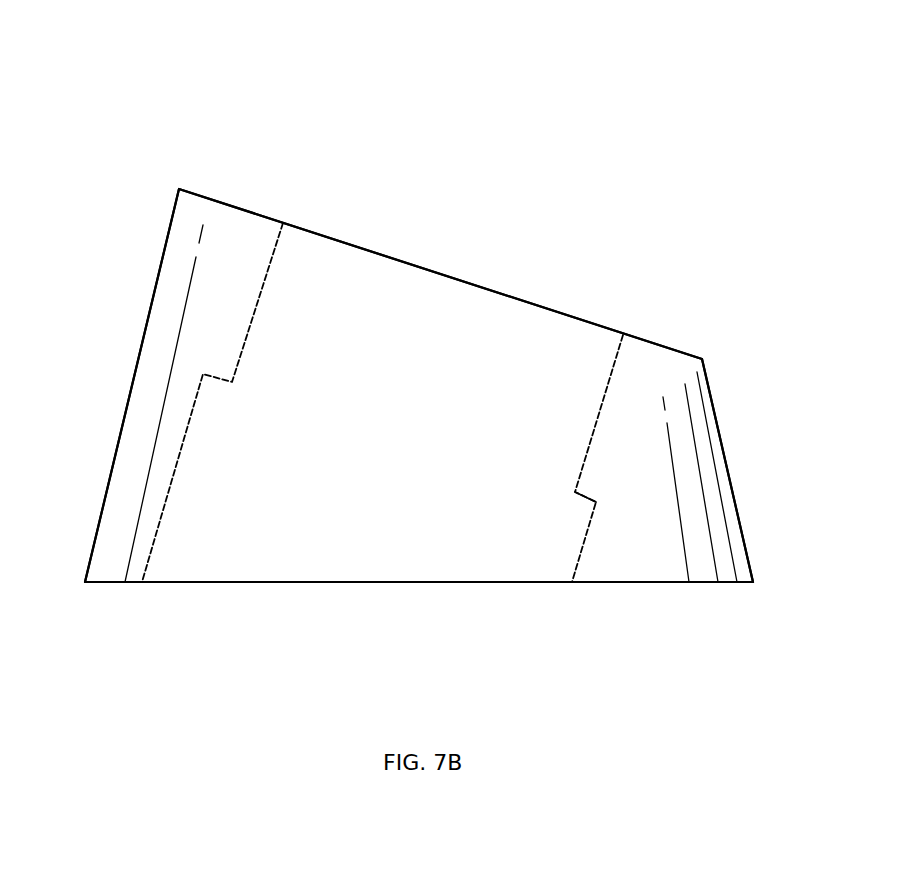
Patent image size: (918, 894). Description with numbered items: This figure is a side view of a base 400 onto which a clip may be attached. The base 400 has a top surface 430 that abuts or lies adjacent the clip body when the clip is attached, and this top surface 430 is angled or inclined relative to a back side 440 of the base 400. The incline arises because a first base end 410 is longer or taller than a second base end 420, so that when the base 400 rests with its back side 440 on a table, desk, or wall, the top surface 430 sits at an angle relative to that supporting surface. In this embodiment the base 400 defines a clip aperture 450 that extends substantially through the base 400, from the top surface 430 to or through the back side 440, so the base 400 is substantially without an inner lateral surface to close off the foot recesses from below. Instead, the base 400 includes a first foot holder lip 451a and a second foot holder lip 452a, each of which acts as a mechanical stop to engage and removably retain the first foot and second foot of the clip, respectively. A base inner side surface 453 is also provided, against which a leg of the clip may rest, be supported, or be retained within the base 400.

The base 400 is at (112, 128).
The first base end 410 is at (156, 282).
The second base end 420 is at (734, 488).
The top surface 430 is at (247, 208).
The back side 440 is at (112, 582).
The clip aperture 450 is at (404, 366).
The first foot holder lip 451a is at (213, 375).
The second foot holder lip 452a is at (588, 495).
The base inner side surface 453 is at (580, 465).